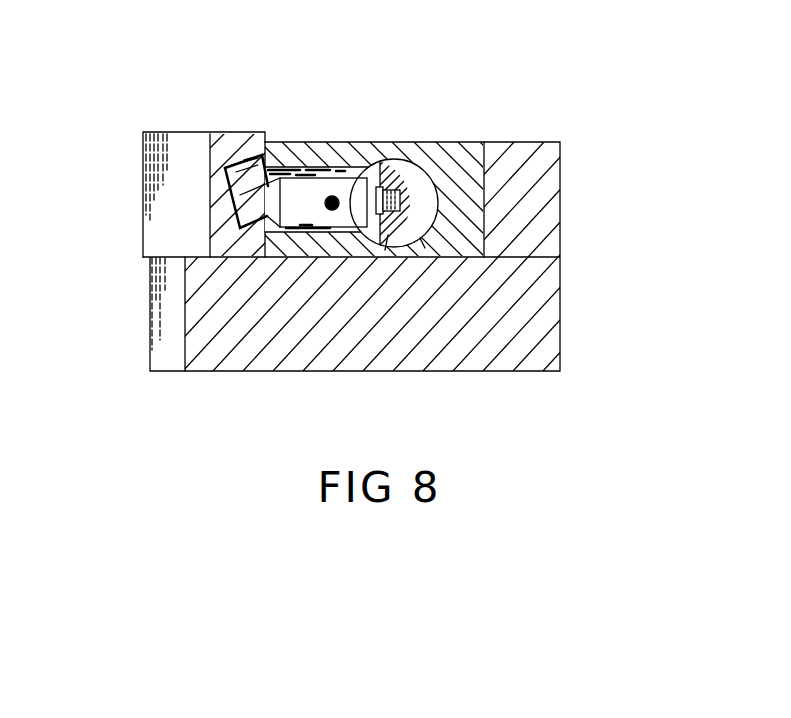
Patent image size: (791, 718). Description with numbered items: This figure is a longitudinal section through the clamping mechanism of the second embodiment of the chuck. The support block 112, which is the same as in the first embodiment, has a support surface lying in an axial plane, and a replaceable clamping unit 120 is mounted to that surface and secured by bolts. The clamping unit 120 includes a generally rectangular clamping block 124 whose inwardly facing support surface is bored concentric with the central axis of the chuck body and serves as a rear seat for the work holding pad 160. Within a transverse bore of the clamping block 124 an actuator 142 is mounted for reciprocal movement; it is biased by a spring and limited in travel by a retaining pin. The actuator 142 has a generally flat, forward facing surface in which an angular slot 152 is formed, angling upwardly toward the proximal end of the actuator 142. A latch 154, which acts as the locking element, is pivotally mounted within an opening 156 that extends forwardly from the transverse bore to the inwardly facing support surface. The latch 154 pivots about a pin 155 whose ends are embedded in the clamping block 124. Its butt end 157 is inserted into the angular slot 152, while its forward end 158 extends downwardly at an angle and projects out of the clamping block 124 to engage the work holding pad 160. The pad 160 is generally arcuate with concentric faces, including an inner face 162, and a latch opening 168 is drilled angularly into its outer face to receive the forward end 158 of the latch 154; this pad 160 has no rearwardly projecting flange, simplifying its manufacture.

The support block 112 is at (565, 188).
The replaceable clamping unit 120 is at (418, 138).
The clamping block 124 is at (455, 158).
The actuator 142 is at (386, 250).
The angular slot 152 is at (423, 197).
The latch 154 is at (292, 188).
The pin 155 is at (332, 210).
The opening 156 is at (336, 167).
The butt end 157 is at (425, 248).
The forward end 158 is at (233, 160).
The work holding pad 160 is at (158, 131).
The inner face 162 is at (170, 233).
The latch opening 168 is at (247, 152).